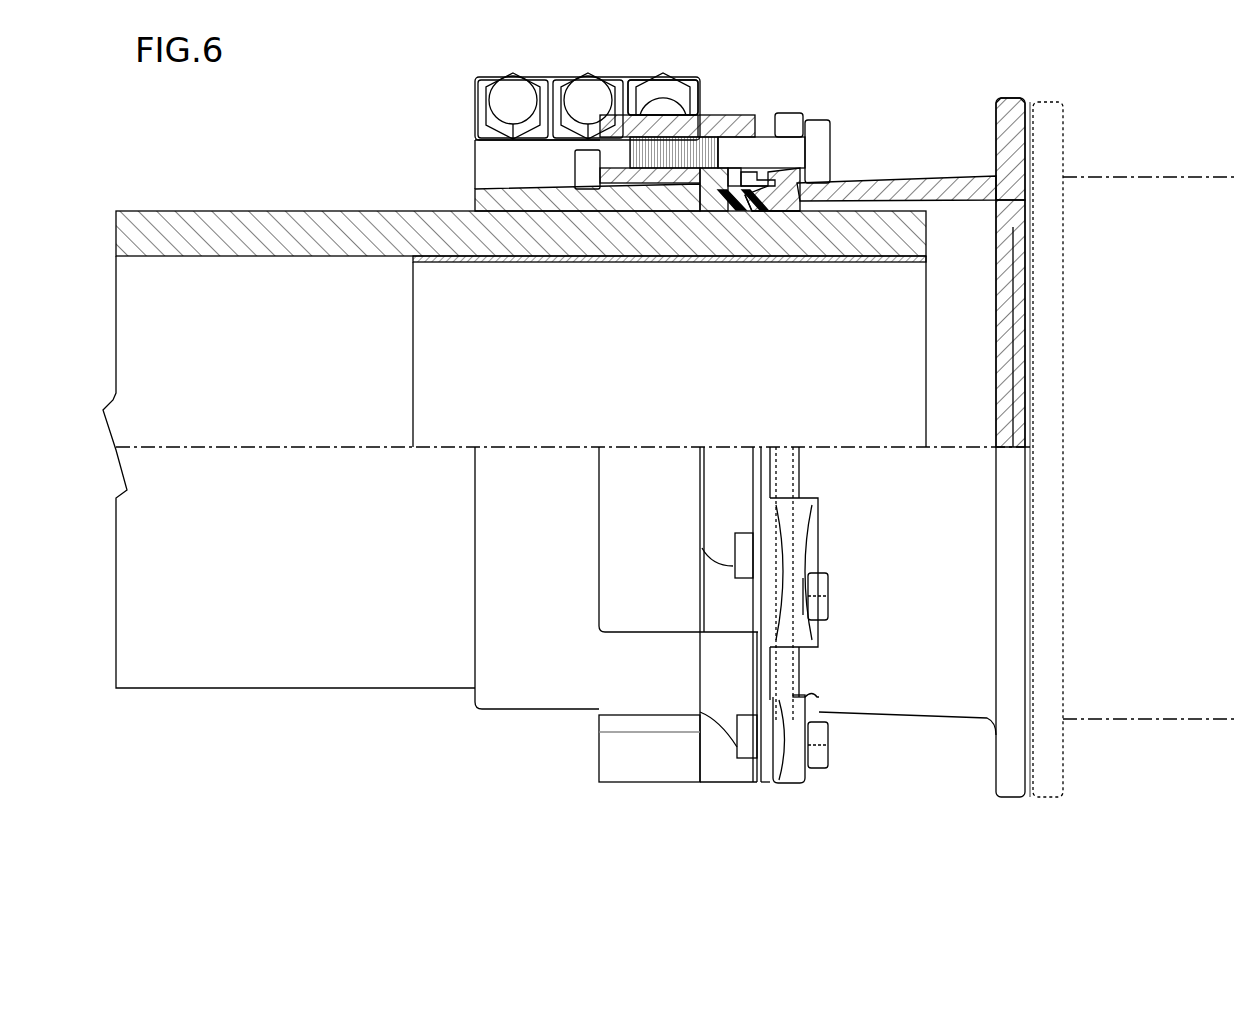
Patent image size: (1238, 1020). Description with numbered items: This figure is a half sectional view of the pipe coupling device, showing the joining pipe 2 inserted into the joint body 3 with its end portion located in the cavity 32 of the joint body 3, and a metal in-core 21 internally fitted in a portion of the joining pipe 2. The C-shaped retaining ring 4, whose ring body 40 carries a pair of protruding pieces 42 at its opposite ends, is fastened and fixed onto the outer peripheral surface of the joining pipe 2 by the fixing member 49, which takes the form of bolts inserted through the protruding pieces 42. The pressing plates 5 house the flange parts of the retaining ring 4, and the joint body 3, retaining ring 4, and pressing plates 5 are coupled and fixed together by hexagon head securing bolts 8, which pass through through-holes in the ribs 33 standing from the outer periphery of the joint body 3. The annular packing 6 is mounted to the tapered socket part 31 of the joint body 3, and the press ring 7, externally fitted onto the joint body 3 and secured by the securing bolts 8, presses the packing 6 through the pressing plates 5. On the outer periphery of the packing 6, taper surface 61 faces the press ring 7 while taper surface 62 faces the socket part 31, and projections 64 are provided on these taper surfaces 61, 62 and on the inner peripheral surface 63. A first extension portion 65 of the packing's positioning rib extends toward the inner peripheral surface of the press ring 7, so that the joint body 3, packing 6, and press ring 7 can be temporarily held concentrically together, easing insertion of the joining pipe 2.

The joining pipe 2 is at (215, 210).
The joint body 3 is at (997, 110).
The retaining ring 4 is at (475, 200).
The pressing plates 5 is at (620, 80).
The packing 6 is at (735, 185).
The press ring 7 is at (700, 112).
The securing bolts 8 is at (828, 152).
The in-core 21 is at (425, 262).
The socket part 31 is at (790, 188).
The cavity 32 is at (878, 198).
The ribs 33 is at (795, 535).
The ring body 40 is at (478, 189).
The protruding pieces 42 is at (476, 80).
The fixing member 49 is at (514, 90).
The taper surface 61 is at (727, 206).
The taper surface 62 is at (800, 208).
The inner peripheral surface 63 is at (734, 200).
The projections 64 is at (762, 205).
The first extension portion 65 is at (745, 200).